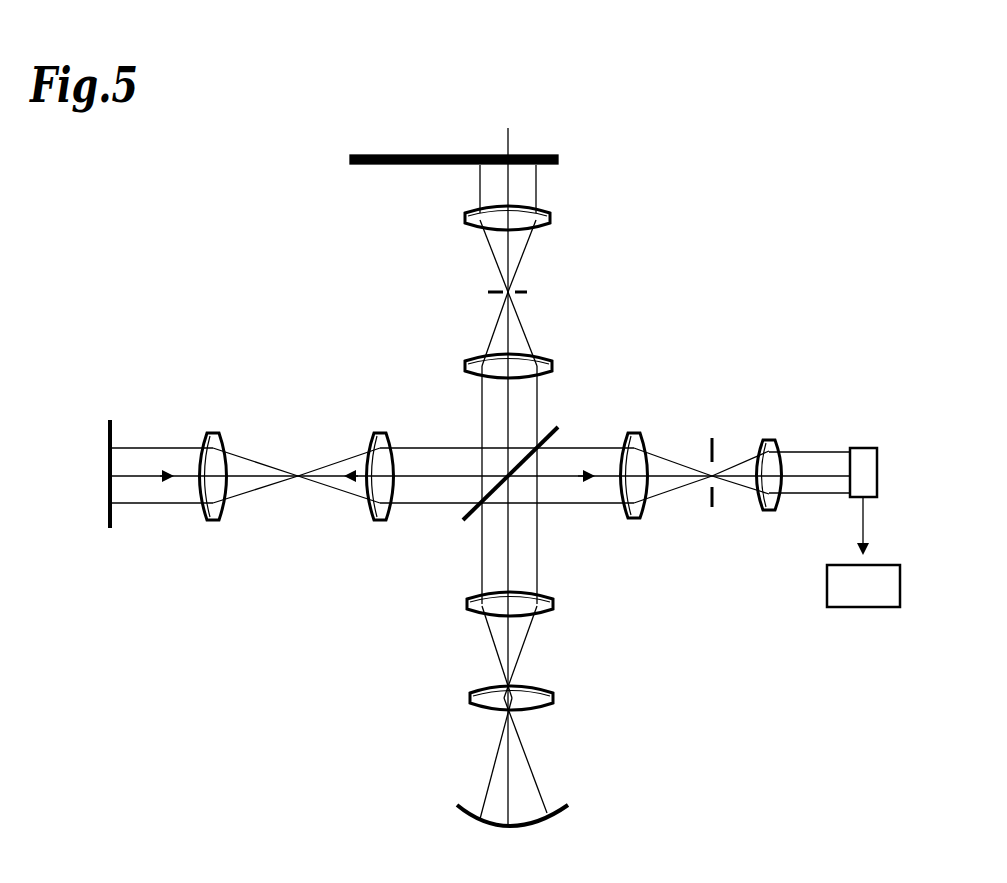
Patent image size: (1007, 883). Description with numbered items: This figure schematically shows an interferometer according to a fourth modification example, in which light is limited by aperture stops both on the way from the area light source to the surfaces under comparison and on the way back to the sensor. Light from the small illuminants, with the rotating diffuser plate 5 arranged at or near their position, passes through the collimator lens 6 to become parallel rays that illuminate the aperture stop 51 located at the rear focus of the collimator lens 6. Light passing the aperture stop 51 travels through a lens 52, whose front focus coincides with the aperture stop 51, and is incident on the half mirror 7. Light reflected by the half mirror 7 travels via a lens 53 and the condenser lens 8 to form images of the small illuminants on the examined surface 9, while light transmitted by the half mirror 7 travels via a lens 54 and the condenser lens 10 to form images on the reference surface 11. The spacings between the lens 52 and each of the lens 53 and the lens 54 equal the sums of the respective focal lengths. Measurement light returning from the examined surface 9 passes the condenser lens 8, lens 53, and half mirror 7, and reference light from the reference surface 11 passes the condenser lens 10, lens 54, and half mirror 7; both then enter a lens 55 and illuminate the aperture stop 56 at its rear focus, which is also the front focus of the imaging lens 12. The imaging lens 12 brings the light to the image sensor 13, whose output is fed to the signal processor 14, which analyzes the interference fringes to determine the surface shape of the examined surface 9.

The rotating diffuser plate 5 is at (575, 155).
The collimator lens 6 is at (545, 212).
The aperture stop 51 is at (520, 292).
The lens 52 is at (468, 358).
The lens 53 is at (375, 432).
The half mirror 7 is at (488, 490).
The condenser lens 8 is at (208, 432).
The examined surface 9 is at (114, 462).
The lens 55 is at (630, 432).
The aperture stop 56 is at (710, 440).
The imaging lens 12 is at (764, 440).
The image sensor 13 is at (865, 455).
The signal processor 14 is at (863, 552).
The lens 54 is at (555, 602).
The condenser lens 10 is at (553, 698).
The reference surface 11 is at (480, 815).